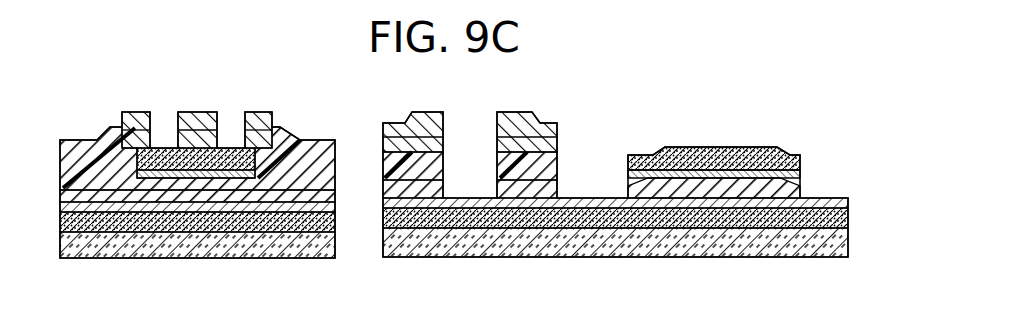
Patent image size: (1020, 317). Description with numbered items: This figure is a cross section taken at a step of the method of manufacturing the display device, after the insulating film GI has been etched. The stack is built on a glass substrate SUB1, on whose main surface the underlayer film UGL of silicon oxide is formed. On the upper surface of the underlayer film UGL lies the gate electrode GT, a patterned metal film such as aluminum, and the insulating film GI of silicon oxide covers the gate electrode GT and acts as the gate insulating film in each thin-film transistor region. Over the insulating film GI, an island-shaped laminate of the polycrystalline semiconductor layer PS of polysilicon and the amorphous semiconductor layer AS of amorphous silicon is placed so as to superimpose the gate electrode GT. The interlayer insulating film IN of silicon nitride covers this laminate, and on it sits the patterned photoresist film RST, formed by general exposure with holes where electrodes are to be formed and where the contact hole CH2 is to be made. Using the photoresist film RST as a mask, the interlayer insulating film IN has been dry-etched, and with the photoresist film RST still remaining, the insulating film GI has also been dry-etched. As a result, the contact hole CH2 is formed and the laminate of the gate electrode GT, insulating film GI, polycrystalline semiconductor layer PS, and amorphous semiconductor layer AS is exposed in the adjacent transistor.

The substrate SUB1 is at (90, 247).
The underlayer film UGL is at (268, 238).
The insulating film GI is at (327, 207).
The gate electrode GT is at (178, 196).
The interlayer insulating film IN is at (93, 170).
The photoresist film RST is at (300, 142).
The amorphous semiconductor layer AS is at (165, 150).
The polycrystalline semiconductor layer PS is at (233, 149).
The contact hole CH2 is at (447, 153).